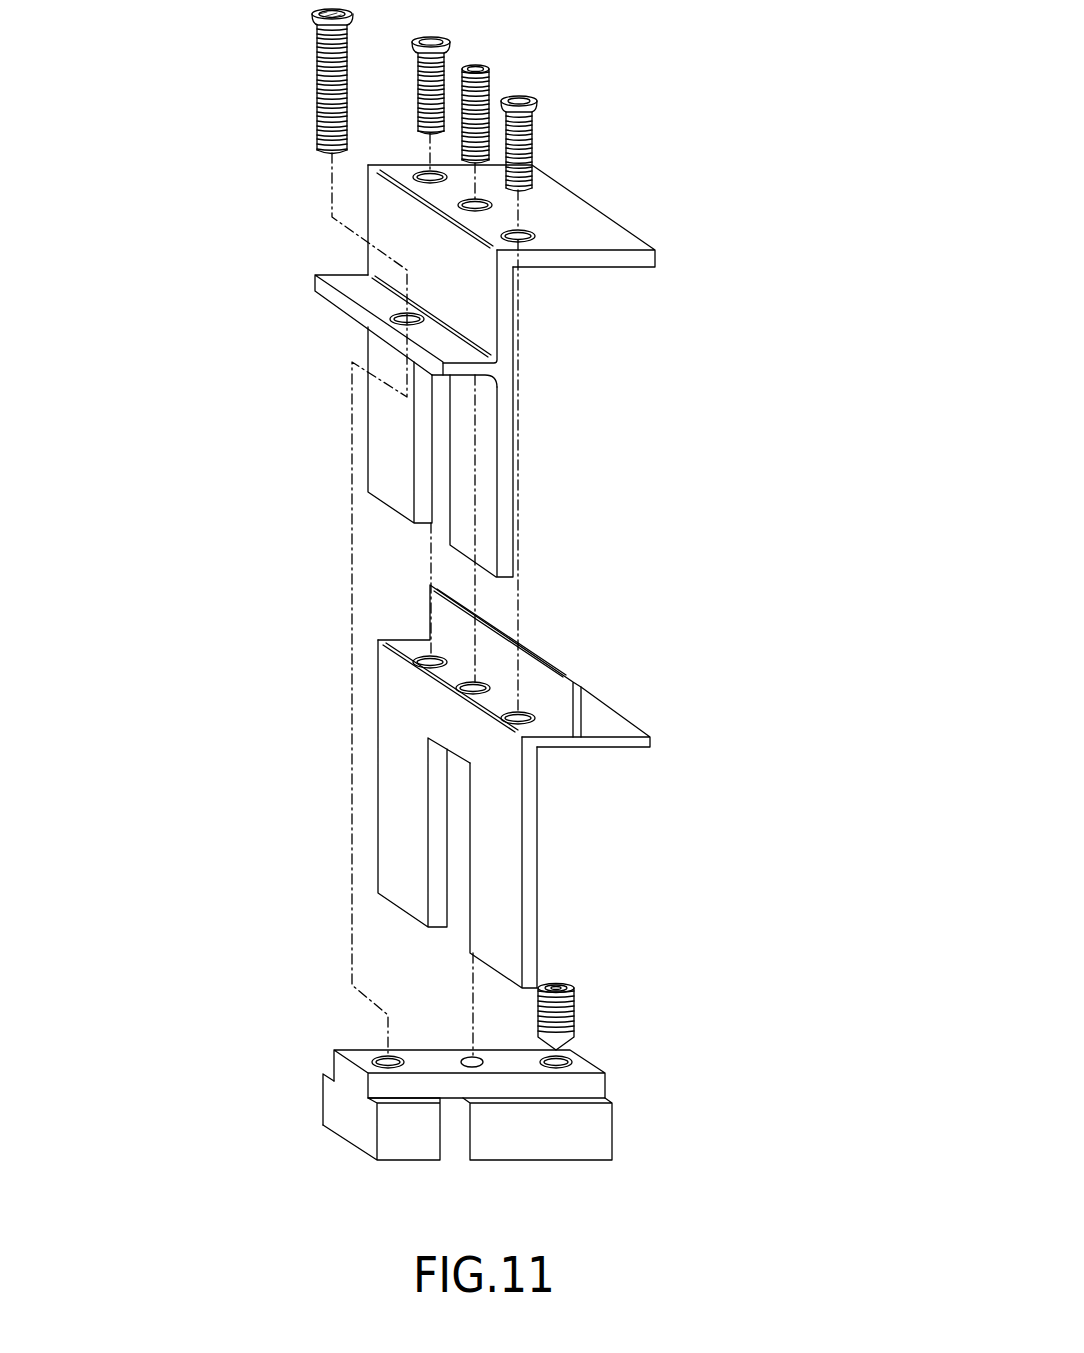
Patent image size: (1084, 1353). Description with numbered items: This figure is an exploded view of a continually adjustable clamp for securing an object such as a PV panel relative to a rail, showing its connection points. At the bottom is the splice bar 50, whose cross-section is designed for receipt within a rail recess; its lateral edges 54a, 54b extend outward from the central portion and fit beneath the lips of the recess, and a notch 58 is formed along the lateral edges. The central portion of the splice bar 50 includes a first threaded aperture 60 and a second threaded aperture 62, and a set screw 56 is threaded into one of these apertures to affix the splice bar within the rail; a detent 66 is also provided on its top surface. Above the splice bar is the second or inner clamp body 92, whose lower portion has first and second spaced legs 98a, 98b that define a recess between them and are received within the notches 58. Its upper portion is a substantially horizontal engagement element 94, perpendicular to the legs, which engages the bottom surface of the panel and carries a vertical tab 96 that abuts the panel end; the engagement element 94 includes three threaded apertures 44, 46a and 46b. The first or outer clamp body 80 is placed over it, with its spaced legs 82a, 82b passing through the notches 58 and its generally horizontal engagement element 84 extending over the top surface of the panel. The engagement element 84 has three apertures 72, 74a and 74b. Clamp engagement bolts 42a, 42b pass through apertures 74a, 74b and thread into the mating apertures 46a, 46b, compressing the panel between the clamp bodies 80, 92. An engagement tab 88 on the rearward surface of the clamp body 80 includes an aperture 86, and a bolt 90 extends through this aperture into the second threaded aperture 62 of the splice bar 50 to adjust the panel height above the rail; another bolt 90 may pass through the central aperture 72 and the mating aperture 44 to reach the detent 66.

The bolt 90 is at (320, 72).
The clamp engagement bolt 42a is at (535, 108).
The clamp engagement bolt 42b is at (448, 50).
The aperture 74a is at (531, 240).
The aperture 74b is at (418, 178).
The central aperture 72 is at (488, 206).
The engagement element 84 is at (612, 238).
The engagement tab 88 is at (315, 283).
The aperture 86 is at (390, 318).
The clamp body 80 is at (528, 302).
The leg 82a is at (490, 522).
The leg 82b is at (375, 485).
The second clamp body 92 is at (547, 793).
The vertical tab 96 is at (580, 683).
The engagement element 94 is at (650, 739).
The threaded aperture 44 is at (462, 692).
The threaded aperture 46a is at (538, 724).
The threaded aperture 46b is at (413, 660).
The leg 98a is at (385, 878).
The leg 98b is at (516, 930).
The set screw 56 is at (575, 1007).
The splice bar 50 is at (608, 1075).
The lateral edge 54a is at (372, 1100).
The lateral edge 54b is at (333, 1075).
The notch 58 is at (467, 1148).
The second threaded aperture 62 is at (377, 1060).
The detent 66 is at (466, 1058).
The first threaded aperture 60 is at (573, 1061).